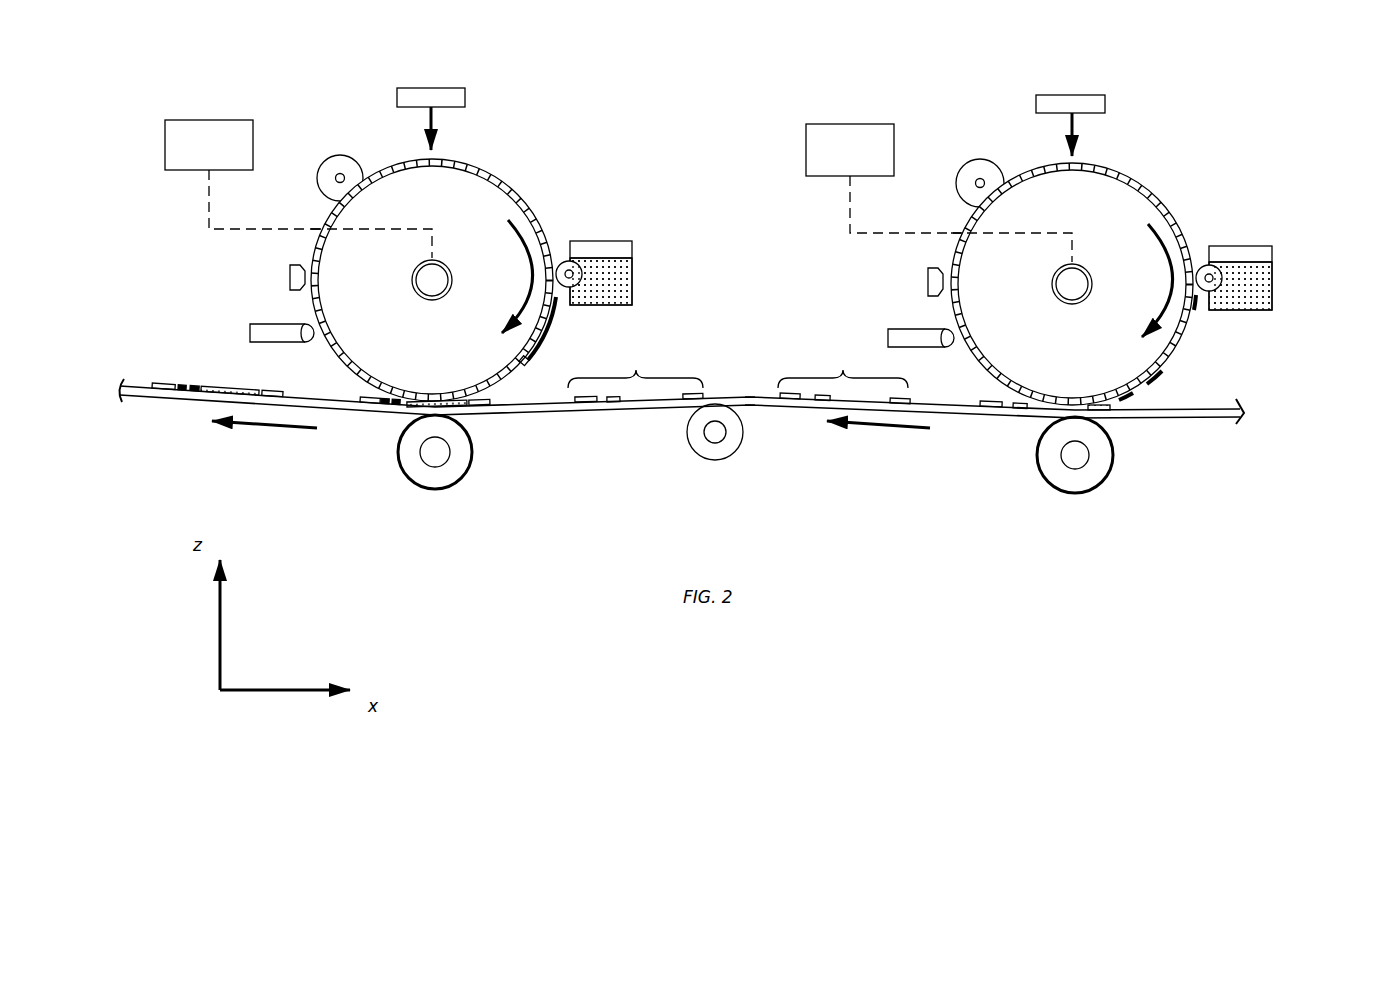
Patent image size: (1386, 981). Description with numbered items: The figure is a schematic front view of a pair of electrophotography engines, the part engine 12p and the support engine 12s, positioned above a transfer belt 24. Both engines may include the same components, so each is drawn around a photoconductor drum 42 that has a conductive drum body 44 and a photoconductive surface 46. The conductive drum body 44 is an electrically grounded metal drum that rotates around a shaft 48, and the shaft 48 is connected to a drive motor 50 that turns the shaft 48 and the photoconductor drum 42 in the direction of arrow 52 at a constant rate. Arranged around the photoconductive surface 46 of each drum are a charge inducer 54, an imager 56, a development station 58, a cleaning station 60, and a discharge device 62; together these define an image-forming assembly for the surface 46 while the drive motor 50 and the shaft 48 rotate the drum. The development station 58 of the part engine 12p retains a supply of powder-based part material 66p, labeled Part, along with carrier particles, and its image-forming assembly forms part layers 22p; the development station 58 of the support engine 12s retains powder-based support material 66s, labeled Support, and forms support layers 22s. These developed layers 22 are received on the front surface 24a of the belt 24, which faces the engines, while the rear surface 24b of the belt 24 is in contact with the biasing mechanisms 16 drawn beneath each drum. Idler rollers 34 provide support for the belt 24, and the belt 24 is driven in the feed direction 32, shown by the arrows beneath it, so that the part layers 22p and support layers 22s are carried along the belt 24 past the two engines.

The EP engine 12p is at (530, 81).
The EP engine 12s is at (1168, 86).
The biasing mechanisms 16 is at (452, 460).
The layers 22 is at (205, 381).
The part layers 22p is at (559, 333).
The support layers 22s is at (1247, 372).
The transfer medium 24 is at (1203, 420).
The front surface 24a is at (750, 388).
The rear surface 24b is at (755, 412).
The feed direction 32 is at (262, 431).
The idler rollers 34 is at (718, 458).
The photoconductor drum 42 is at (541, 195).
The conductive drum body 44 is at (443, 355).
The photoconductive surface 46 is at (474, 172).
The shaft 48 is at (422, 278).
The drive motor 50 is at (178, 119).
The direction of arrow 52 is at (523, 247).
The charge inducer 54 is at (349, 156).
The imager 56 is at (410, 88).
The development station 58 is at (639, 240).
The cleaning station 60 is at (266, 324).
The discharge device 62 is at (290, 266).
The part material 66p is at (617, 268).
The support material 66s is at (1252, 292).